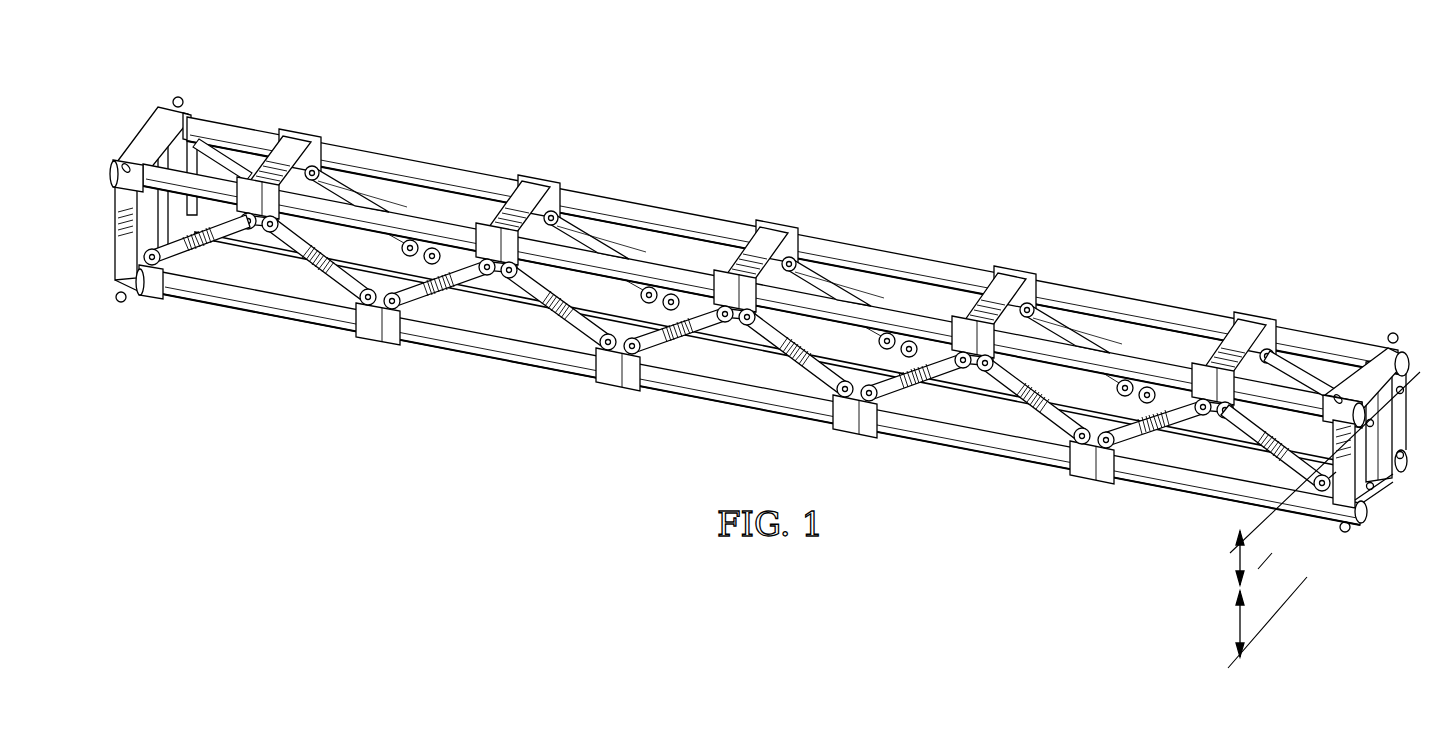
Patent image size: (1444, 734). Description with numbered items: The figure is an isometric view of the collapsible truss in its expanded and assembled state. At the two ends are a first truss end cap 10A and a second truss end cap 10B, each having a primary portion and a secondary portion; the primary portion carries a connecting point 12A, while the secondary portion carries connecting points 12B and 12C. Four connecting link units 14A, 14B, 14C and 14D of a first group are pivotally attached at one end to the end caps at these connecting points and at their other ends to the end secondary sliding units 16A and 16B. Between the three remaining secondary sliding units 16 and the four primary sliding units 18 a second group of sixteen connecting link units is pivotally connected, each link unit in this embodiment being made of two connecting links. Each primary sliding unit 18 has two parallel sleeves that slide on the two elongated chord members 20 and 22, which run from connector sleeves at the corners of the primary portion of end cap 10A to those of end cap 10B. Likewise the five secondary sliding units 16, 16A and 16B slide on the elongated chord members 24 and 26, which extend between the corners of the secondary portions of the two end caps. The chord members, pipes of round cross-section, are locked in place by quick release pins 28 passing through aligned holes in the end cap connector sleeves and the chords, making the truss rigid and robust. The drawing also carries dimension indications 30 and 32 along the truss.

The first truss end cap 10A is at (1380, 488).
The second truss end cap 10B is at (147, 128).
The connecting point 12A is at (1320, 490).
The connecting point 12B is at (150, 297).
The connecting point 12C is at (212, 192).
The connecting link unit 14A is at (1240, 425).
The connecting link unit 14B is at (1302, 372).
The connecting link unit 14C is at (203, 238).
The connecting link unit 14D is at (252, 175).
The secondary sliding unit 16 is at (540, 182).
The secondary sliding unit 16A is at (1243, 315).
The secondary sliding unit 16B is at (310, 137).
The primary sliding unit 18 is at (380, 340).
The elongated chord member 20 is at (497, 303).
The elongated chord member 22 is at (550, 366).
The elongated chord member 24 is at (665, 207).
The elongated chord member 26 is at (893, 306).
The quick release pin 28 is at (178, 97).
The length dimension 30 is at (1240, 623).
The length dimension 32 is at (1240, 560).